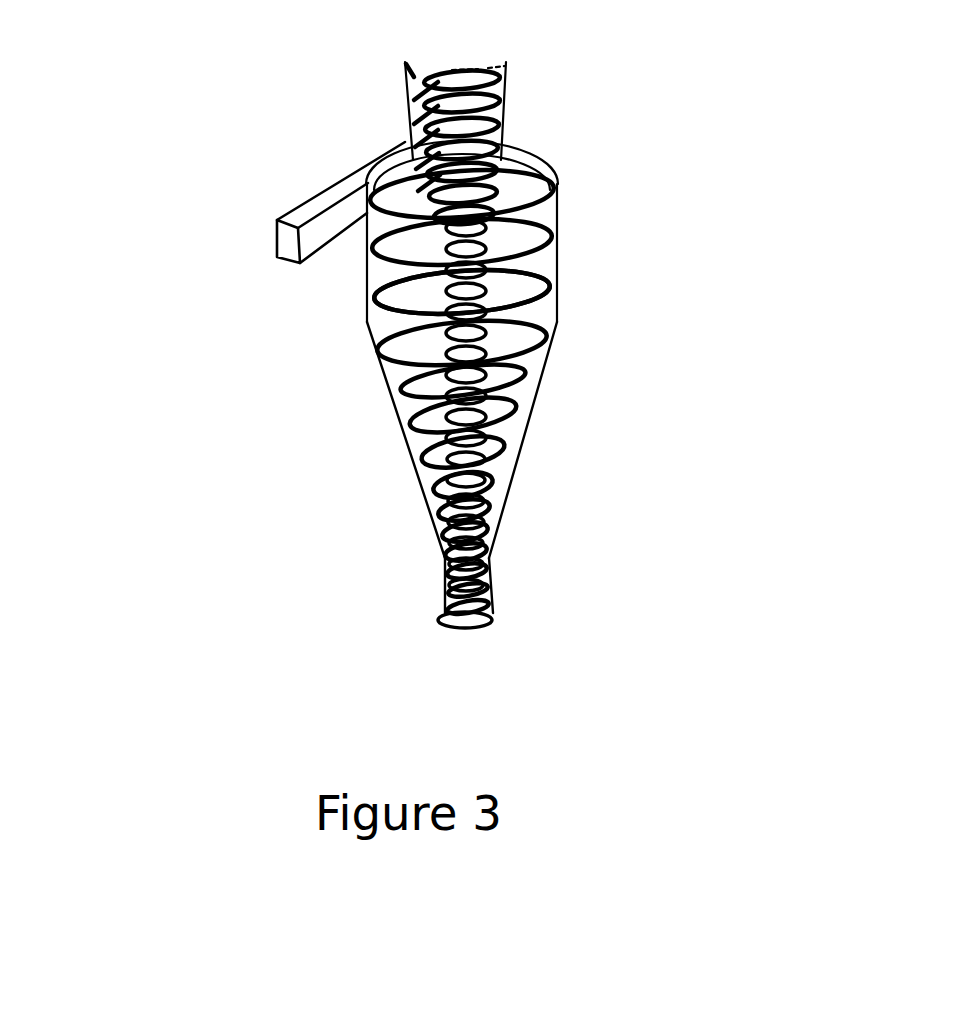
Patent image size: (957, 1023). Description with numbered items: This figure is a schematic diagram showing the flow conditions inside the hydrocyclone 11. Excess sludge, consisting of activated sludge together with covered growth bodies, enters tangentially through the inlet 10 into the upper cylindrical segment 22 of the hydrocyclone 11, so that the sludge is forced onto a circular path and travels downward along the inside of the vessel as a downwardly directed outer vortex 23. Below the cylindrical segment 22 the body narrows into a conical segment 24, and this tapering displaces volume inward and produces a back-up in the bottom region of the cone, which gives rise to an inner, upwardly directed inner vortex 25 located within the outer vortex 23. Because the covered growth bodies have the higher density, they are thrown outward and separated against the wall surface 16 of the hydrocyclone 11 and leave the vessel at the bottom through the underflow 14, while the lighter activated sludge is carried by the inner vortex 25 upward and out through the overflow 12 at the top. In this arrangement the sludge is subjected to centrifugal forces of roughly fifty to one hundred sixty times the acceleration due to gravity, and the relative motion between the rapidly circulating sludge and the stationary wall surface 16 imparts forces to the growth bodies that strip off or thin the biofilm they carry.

The inlet 10 is at (284, 243).
The hydrocyclone 11 is at (250, 128).
The overflow 12 is at (507, 62).
The underflow 14 is at (435, 622).
The wall surface 16 is at (385, 387).
The cylindrical segment 22 is at (565, 237).
The outer vortex 23 is at (372, 296).
The conical segment 24 is at (540, 420).
The inner vortex 25 is at (467, 295).